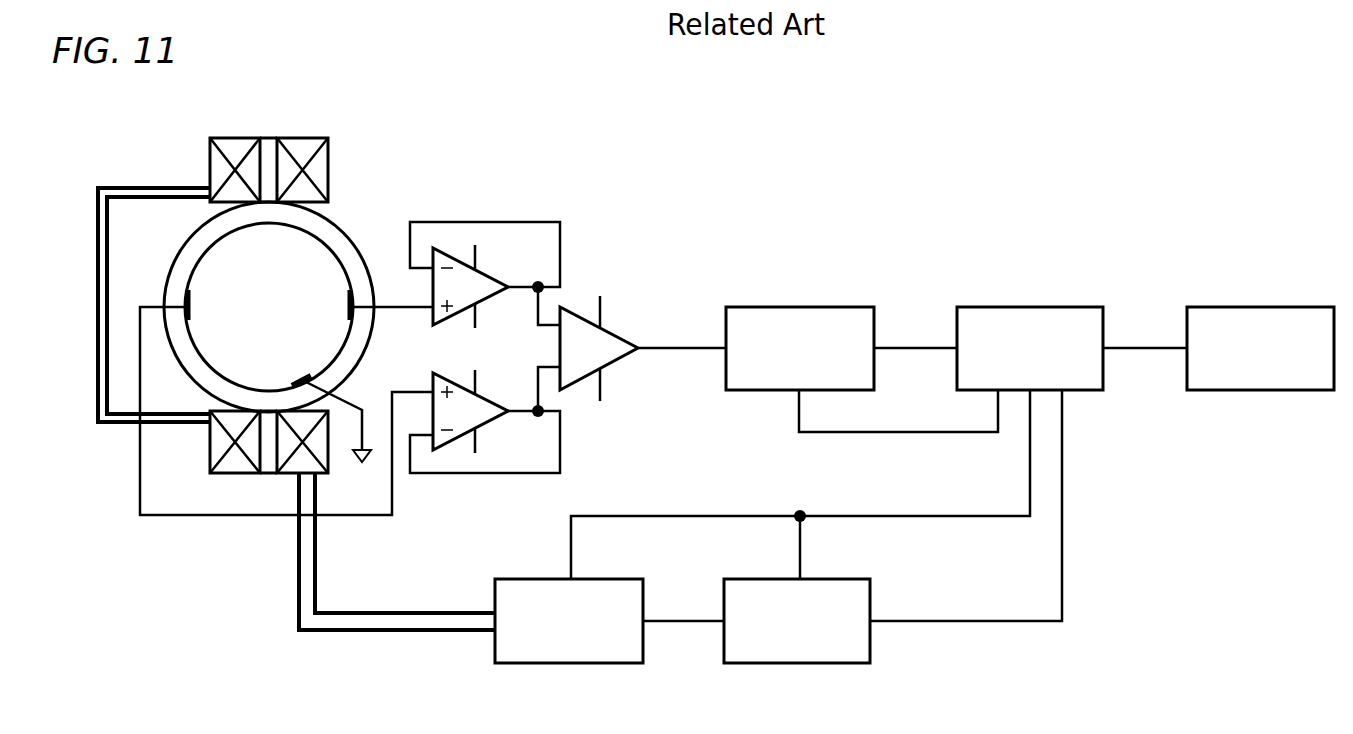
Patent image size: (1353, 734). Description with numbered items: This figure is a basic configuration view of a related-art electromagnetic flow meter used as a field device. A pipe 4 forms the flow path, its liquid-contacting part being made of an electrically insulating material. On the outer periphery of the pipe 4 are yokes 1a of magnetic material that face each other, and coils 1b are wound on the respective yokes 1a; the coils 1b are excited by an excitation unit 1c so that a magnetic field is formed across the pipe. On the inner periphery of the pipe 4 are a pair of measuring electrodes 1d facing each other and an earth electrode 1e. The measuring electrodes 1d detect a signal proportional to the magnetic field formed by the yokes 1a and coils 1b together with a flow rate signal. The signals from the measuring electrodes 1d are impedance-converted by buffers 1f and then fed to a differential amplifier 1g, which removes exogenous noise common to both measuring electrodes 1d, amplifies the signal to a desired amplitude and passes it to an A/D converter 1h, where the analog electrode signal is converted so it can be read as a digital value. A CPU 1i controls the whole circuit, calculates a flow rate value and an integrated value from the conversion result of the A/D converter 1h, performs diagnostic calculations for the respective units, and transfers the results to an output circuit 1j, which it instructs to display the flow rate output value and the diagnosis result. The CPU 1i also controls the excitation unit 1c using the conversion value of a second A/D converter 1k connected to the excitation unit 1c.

The pipe 4 is at (167, 257).
The yokes 1a is at (266, 138).
The coils 1b is at (313, 138).
The excitation unit 1c is at (569, 605).
The measuring electrodes 1d is at (344, 302).
The earth electrode 1e is at (310, 374).
The buffers 1f is at (485, 347).
The differential amplifier 1g is at (599, 348).
The A/D converter 1h is at (800, 333).
The CPU 1i is at (1030, 333).
The output circuit 1j is at (1260, 333).
The A/D converter 1k is at (797, 605).